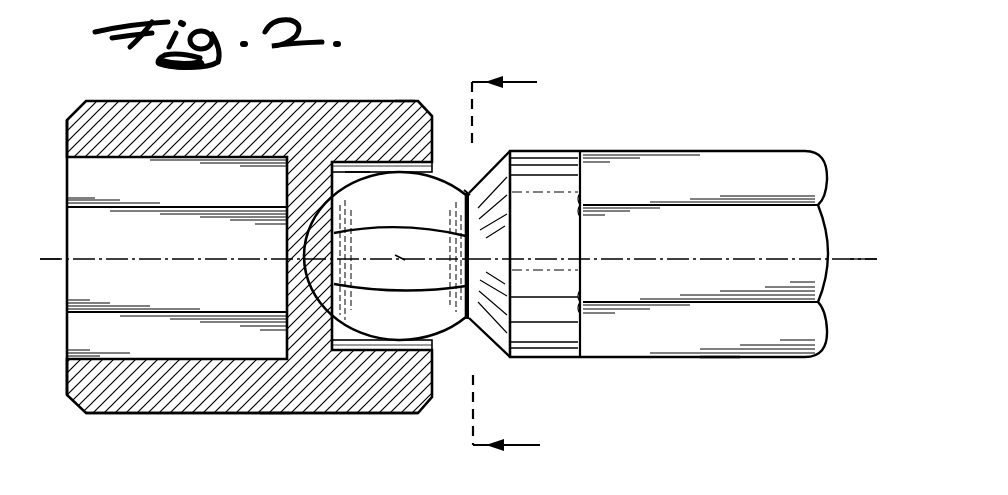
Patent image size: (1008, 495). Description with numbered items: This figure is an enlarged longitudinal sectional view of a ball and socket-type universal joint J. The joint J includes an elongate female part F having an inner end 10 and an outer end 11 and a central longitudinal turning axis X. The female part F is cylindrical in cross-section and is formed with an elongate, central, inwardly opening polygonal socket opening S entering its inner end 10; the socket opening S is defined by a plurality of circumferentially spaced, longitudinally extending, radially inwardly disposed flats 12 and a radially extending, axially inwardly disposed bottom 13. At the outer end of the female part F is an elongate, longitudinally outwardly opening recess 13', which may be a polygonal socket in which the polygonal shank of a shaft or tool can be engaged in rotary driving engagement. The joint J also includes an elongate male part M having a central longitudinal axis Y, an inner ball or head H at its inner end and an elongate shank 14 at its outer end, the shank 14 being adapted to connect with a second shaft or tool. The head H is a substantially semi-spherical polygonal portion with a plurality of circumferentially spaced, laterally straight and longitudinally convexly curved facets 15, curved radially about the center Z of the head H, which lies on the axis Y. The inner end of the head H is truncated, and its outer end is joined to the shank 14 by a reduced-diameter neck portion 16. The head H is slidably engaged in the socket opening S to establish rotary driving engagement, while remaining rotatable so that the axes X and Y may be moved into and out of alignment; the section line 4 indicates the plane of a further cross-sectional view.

The inner end 10 is at (440, 378).
The outer end 11 is at (67, 383).
The flats 12 is at (404, 341).
The bottom 13 is at (286, 277).
The recess 13' is at (252, 397).
The shank 14 is at (788, 165).
The facets 15 is at (404, 167).
The neck portion 16 is at (473, 251).
The female part F is at (428, 62).
The head H is at (462, 194).
The universal joint J is at (275, 413).
The male part M is at (718, 358).
The socket opening S is at (358, 170).
The center Z is at (400, 262).
The turning axis X is at (50, 259).
The axis Y is at (866, 259).
The section line 4 is at (510, 268).